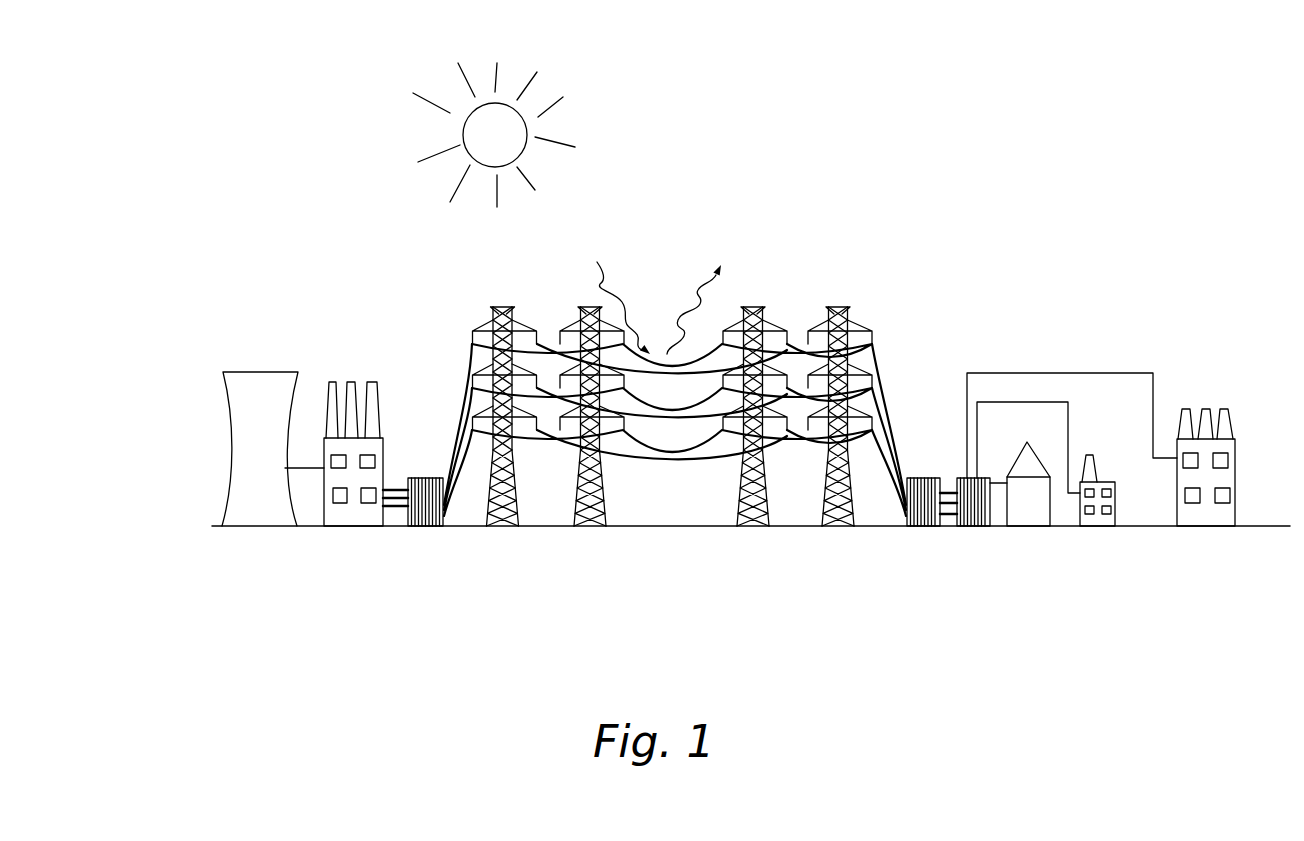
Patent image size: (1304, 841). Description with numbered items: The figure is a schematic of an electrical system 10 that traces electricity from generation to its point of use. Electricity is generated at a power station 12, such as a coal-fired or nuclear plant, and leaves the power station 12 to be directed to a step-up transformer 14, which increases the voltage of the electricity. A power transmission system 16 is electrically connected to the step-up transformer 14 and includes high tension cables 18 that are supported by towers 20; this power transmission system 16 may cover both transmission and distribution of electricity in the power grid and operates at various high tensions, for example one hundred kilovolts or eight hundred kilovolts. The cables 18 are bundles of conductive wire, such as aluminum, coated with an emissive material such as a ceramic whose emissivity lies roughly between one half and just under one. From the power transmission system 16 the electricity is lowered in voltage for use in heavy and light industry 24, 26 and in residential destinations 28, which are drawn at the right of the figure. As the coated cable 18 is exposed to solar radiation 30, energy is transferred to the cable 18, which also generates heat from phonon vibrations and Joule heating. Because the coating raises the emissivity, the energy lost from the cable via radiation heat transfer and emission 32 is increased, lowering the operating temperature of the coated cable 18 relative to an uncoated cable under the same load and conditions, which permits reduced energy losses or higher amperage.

The electrical system 10 is at (890, 133).
The power station 12 is at (307, 340).
The step-up transformer 14 is at (418, 526).
The power transmission system 16 is at (687, 208).
The high tension cables 18 is at (652, 460).
The towers 20 is at (740, 495).
The heavy industry 24 is at (1202, 517).
The light industry 26 is at (1098, 527).
The residential destinations 28 is at (1027, 518).
The solar radiation 30 is at (598, 283).
The radiation heat transfer and emission 32 is at (700, 300).